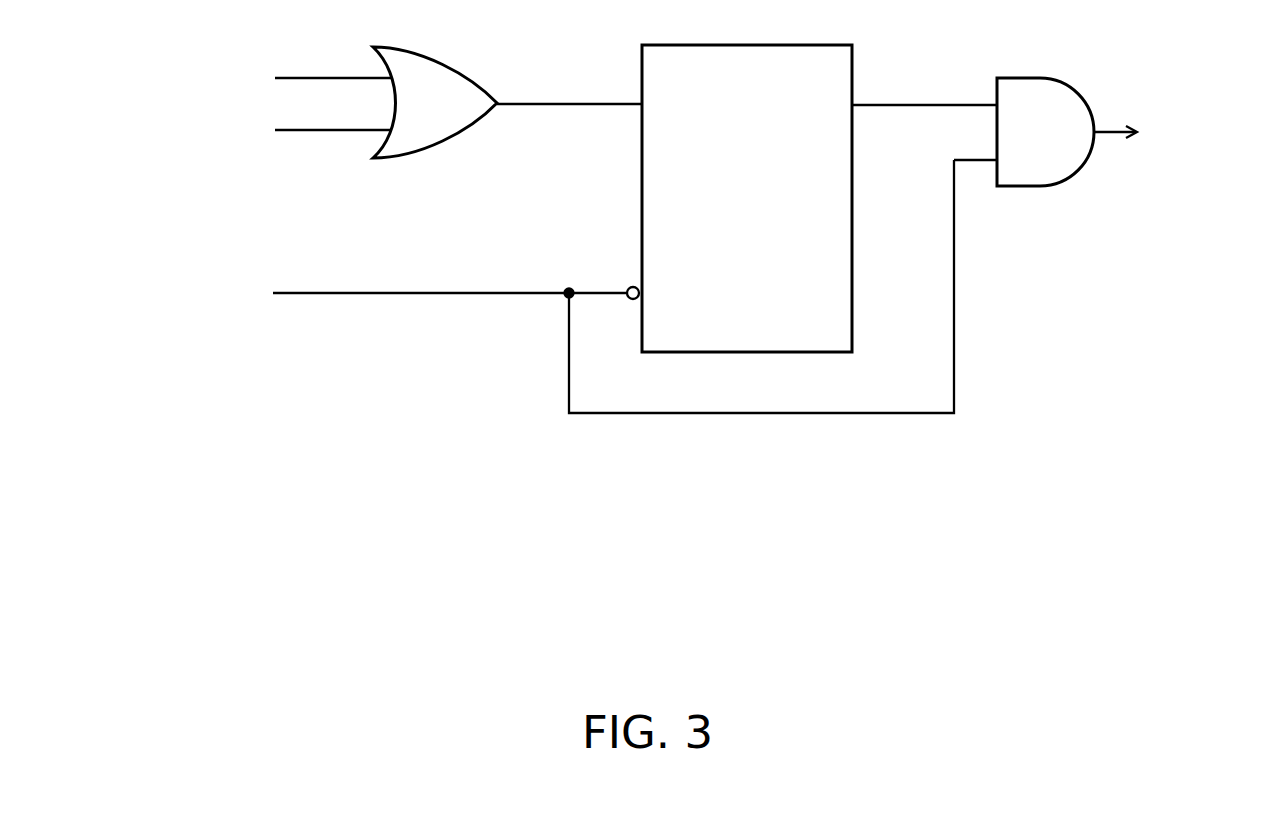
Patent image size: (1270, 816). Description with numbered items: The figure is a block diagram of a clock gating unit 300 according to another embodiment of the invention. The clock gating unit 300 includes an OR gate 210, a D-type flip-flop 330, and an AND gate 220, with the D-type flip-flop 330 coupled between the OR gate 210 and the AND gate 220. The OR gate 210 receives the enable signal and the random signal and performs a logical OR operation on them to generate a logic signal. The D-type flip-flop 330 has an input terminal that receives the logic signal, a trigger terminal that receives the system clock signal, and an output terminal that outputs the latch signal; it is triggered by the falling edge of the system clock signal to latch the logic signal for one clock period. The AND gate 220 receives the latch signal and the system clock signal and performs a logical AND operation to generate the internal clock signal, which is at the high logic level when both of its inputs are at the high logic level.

The OR gate 210 is at (461, 119).
The AND gate 220 is at (1070, 146).
The D-type flip-flop 330 is at (776, 214).
The clock gating unit 300 is at (622, 543).